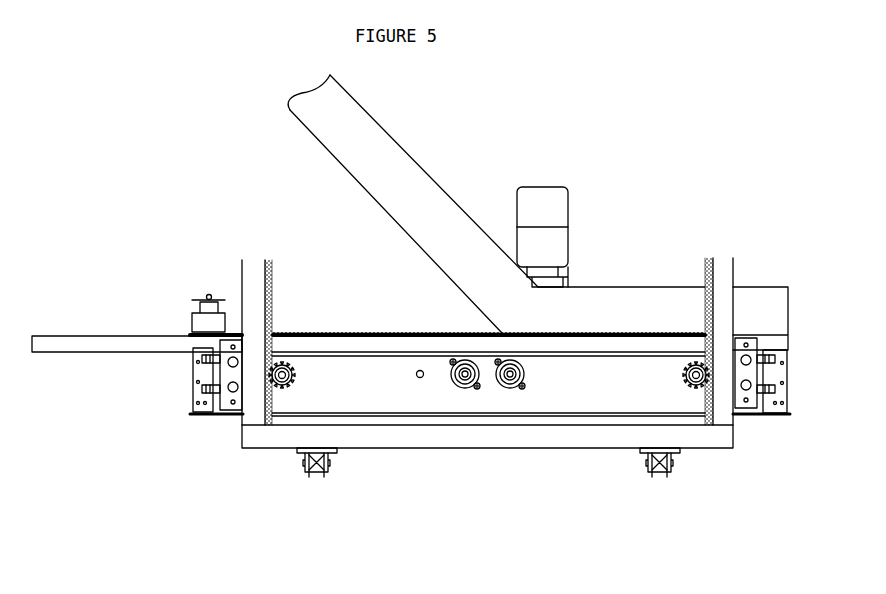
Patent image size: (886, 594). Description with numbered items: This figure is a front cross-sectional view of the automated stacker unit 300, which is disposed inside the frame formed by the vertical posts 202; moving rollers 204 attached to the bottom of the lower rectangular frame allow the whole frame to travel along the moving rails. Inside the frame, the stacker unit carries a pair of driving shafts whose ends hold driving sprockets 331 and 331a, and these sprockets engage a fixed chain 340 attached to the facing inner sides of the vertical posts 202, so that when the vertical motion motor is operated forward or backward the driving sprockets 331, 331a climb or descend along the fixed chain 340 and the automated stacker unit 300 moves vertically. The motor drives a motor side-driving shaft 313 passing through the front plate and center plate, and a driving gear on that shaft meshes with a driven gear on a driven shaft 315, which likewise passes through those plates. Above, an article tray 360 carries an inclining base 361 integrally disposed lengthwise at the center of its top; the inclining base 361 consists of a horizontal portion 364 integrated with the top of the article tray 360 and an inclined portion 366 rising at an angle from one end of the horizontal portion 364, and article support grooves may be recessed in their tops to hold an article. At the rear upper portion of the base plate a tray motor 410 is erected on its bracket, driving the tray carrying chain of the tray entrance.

The vertical post 202 is at (720, 287).
The moving roller 204 is at (315, 477).
The automated stacker unit 300 is at (382, 426).
The motor side-driving shaft 313 is at (513, 392).
The driven shaft 315 is at (455, 358).
The driving sprocket 331 is at (285, 392).
The driving sprocket 331a is at (700, 392).
The fixed chain 340 is at (265, 272).
The article tray 360 is at (125, 338).
The inclining base 361 is at (630, 272).
The horizontal portion 364 is at (765, 310).
The inclined portion 366 is at (363, 143).
The tray motor 410 is at (547, 203).